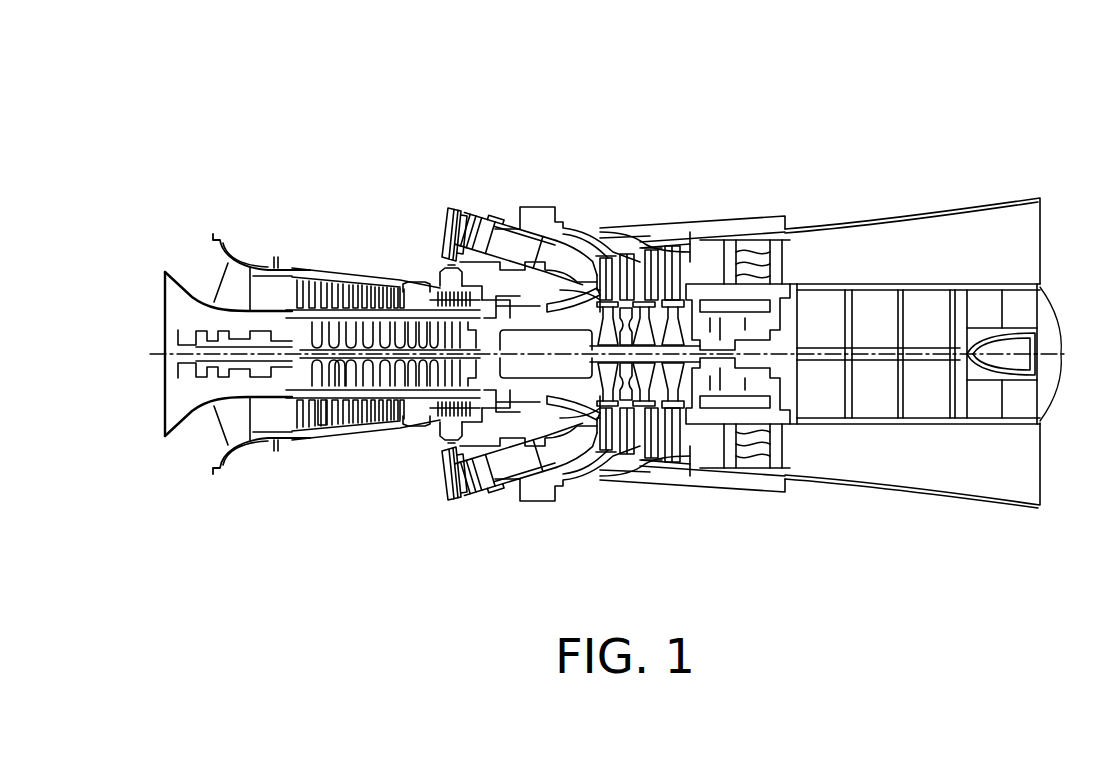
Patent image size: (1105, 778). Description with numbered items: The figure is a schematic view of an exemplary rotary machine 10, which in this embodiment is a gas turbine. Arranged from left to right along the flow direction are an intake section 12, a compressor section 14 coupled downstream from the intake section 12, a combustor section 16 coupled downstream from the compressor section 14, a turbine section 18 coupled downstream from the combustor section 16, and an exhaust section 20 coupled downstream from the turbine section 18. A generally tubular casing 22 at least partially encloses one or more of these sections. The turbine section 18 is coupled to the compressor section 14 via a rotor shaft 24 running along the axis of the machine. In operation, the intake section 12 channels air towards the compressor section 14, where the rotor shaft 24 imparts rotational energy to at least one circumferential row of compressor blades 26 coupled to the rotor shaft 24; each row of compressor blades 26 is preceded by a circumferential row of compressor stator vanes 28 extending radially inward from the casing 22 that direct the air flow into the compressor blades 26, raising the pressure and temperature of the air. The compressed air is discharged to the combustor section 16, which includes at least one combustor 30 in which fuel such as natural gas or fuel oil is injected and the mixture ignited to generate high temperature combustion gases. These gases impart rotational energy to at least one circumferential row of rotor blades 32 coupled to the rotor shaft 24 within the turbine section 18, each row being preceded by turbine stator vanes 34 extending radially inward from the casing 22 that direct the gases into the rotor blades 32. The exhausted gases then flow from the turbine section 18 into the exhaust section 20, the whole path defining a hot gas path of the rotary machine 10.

The rotary machine 10 is at (499, 126).
The intake section 12 is at (178, 252).
The compressor section 14 is at (319, 238).
The combustor section 16 is at (520, 108).
The turbine section 18 is at (675, 103).
The exhaust section 20 is at (903, 161).
The casing 22 is at (693, 228).
The rotor shaft 24 is at (735, 338).
The compressor blades 26 is at (323, 413).
The compressor stator vanes 28 is at (326, 425).
The combustor 30 is at (505, 497).
The rotor blades 32 is at (648, 228).
The turbine stator vanes 34 is at (620, 235).